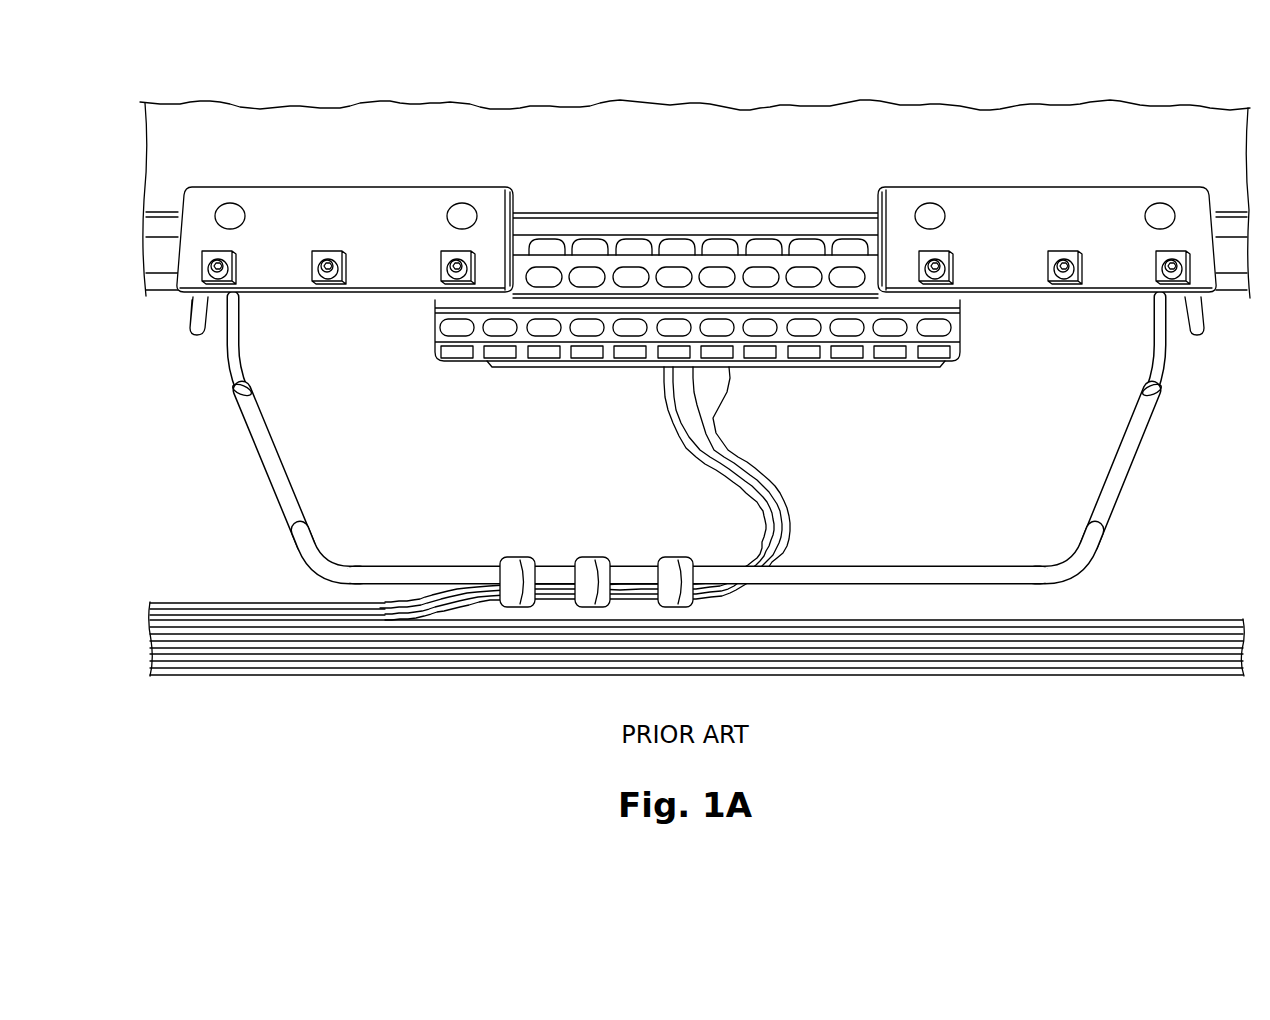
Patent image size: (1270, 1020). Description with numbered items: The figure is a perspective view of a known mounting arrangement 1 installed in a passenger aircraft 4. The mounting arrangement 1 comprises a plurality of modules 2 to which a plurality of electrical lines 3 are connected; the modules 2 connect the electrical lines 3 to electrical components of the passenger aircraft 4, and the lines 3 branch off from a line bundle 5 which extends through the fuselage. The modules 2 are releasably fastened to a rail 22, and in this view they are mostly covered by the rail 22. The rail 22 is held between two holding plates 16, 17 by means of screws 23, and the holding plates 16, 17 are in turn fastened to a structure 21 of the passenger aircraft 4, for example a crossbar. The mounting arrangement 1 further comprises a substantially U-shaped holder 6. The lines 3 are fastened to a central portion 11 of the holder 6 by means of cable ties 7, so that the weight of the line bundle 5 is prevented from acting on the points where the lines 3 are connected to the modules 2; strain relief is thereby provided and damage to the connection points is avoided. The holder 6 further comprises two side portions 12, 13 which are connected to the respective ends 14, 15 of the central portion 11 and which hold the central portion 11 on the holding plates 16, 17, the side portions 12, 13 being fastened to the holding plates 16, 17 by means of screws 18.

The mounting arrangement 1 is at (165, 249).
The module 2 is at (630, 366).
The electrical line 3 is at (758, 523).
The passenger aircraft 4 is at (682, 98).
The line bundle 5 is at (236, 598).
The holder 6 is at (677, 436).
The cable tie 7 is at (517, 556).
The central portion 11 is at (880, 570).
The side portion 12 is at (265, 478).
The side portion 13 is at (1130, 478).
The end of central portion 14 is at (352, 572).
The end of central portion 15 is at (1042, 572).
The holding plate 16 is at (295, 210).
The holding plate 17 is at (1102, 215).
The screw 18 is at (207, 250).
The structure 21 is at (827, 160).
The rail 22 is at (612, 245).
The screw 23 is at (445, 250).